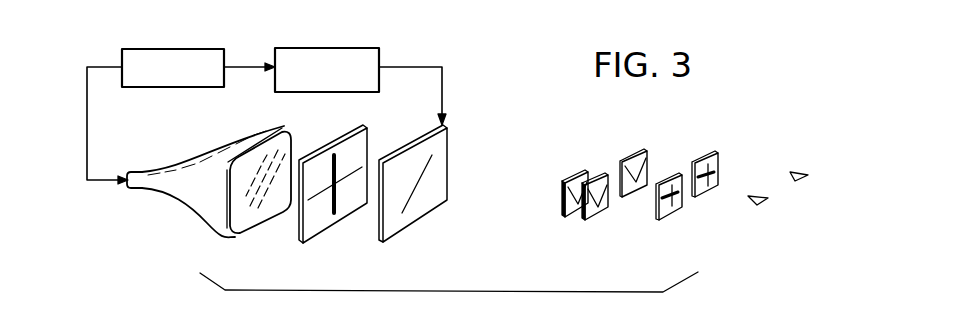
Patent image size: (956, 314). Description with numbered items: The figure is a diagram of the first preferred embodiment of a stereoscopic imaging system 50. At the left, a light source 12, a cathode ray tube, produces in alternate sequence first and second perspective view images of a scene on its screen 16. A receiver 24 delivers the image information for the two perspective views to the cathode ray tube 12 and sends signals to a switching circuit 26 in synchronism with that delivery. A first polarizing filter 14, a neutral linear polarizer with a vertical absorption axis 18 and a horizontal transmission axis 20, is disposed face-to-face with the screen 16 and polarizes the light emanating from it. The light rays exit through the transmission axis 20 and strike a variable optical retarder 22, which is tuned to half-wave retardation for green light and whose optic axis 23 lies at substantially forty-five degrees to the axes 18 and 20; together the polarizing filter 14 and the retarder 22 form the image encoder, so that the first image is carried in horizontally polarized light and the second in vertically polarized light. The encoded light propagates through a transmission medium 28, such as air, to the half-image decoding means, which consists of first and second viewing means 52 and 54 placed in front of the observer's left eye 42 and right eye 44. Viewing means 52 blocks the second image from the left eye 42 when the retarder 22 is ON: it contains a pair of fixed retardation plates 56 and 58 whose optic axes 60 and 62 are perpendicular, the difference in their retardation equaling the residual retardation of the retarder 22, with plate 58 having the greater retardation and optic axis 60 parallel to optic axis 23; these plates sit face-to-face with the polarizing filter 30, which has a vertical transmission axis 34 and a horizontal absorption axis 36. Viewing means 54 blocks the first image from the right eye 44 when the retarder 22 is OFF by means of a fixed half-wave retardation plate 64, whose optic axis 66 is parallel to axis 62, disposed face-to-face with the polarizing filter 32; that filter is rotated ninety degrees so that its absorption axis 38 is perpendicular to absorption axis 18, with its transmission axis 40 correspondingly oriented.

The light source 12 is at (185, 175).
The first polarizing filter 14 is at (293, 233).
The screen 16 is at (291, 148).
The vertical absorption axis 18 is at (335, 173).
The horizontal transmission axis 20 is at (352, 176).
The variable optical retarder 22 is at (433, 185).
The optic axis 23 is at (412, 187).
The receiver 24 is at (122, 52).
The switching circuit 26 is at (382, 56).
The transmission medium 28 is at (518, 196).
The first viewing means 30 is at (687, 201).
The second viewing means 32 is at (727, 169).
The vertical transmission axis 34 is at (660, 187).
The horizontal absorption axis 36 is at (673, 204).
The absorption axis 38 is at (712, 176).
The transmission axis 40 is at (703, 186).
The left eye 42 is at (759, 205).
The right eye 44 is at (797, 182).
The imaging system 50 is at (220, 188).
The first viewing means 52 is at (549, 192).
The second viewing means 54 is at (596, 178).
The fixed retardation plate 56 is at (550, 208).
The fixed retardation plate 58 is at (598, 226).
The optic axis 60 is at (567, 183).
The optic axis 62 is at (600, 206).
The fixed half-wave retardation plate 64 is at (631, 179).
The optic axis 66 is at (630, 148).